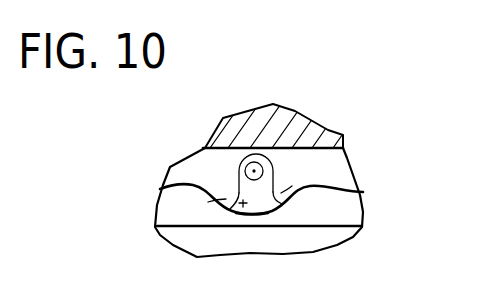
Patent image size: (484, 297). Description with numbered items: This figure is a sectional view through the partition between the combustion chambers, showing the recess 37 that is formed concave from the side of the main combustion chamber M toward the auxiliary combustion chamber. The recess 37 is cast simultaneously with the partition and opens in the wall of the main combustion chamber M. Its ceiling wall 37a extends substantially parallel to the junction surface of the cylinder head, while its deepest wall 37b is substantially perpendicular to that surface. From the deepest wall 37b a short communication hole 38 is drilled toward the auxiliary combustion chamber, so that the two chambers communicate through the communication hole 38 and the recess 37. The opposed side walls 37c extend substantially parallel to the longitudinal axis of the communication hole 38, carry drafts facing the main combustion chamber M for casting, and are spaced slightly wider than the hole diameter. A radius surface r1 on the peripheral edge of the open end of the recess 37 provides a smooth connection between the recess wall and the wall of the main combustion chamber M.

The recess 37 is at (260, 185).
The ceiling wall 37a is at (261, 166).
The deepest wall 37b is at (250, 211).
The side walls 37c is at (236, 191).
The communication hole 38 is at (241, 169).
The radius surface r1 is at (297, 207).
The main combustion chamber M is at (351, 218).